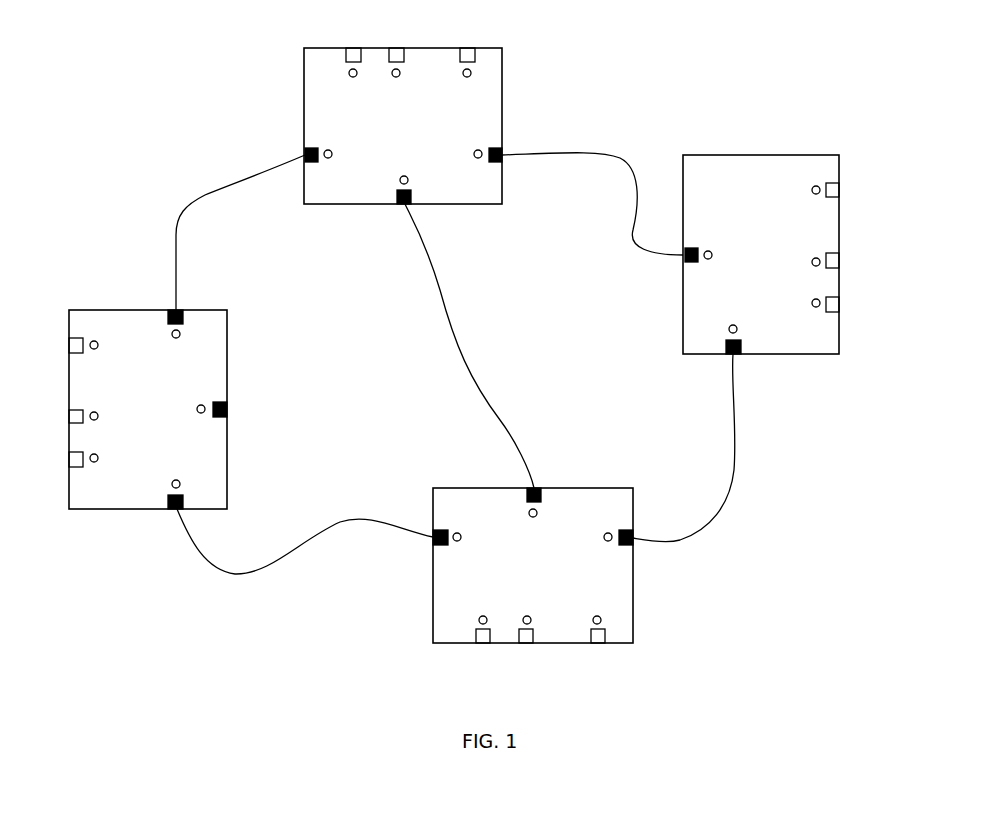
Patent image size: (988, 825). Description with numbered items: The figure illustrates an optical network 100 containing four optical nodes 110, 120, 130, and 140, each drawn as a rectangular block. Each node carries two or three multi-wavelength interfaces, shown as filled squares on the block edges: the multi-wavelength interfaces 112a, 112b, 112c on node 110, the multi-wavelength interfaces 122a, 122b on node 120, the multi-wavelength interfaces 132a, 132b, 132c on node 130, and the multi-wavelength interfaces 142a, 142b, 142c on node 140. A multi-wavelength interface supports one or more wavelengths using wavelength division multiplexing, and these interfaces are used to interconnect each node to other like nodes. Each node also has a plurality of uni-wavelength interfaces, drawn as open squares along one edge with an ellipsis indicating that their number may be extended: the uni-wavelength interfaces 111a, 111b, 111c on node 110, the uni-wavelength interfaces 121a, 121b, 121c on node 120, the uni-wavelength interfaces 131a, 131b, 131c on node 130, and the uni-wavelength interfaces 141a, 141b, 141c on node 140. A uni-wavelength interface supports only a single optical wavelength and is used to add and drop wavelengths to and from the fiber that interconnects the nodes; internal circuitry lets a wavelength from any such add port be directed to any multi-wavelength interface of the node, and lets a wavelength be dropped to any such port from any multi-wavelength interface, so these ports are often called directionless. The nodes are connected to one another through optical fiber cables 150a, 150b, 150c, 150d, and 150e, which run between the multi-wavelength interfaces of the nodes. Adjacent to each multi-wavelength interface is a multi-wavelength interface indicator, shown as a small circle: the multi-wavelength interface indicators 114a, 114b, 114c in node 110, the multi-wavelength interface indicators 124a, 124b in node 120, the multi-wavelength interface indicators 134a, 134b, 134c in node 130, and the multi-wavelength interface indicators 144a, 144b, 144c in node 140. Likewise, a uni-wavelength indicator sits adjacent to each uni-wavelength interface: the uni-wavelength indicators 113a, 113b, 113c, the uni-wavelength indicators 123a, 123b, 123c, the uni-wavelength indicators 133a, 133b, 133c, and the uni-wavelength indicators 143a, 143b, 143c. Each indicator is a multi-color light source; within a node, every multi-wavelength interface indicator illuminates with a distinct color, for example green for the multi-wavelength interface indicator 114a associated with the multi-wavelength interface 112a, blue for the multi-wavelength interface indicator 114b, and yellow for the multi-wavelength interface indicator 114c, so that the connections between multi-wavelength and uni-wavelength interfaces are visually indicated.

The optical network 100 is at (196, 18).
The optical node 110 is at (503, 199).
The uni-wavelength interface 111a is at (348, 48).
The uni-wavelength interface 111b is at (398, 48).
The uni-wavelength interface 111c is at (465, 48).
The multi-wavelength interface 112a is at (306, 149).
The multi-wavelength interface 112b is at (503, 149).
The multi-wavelength interface 112c is at (400, 205).
The uni-wavelength indicator 113a is at (351, 77).
The uni-wavelength indicator 113b is at (394, 77).
The uni-wavelength indicator 113c is at (465, 77).
The multi-wavelength interface indicator 114a is at (331, 157).
The multi-wavelength interface indicator 114b is at (477, 150).
The multi-wavelength interface indicator 114c is at (408, 182).
The optical node 120 is at (841, 162).
The uni-wavelength interface 121a is at (840, 307).
The uni-wavelength interface 121b is at (840, 260).
The uni-wavelength interface 121c is at (840, 190).
The multi-wavelength interface 122a is at (740, 355).
The multi-wavelength interface 122b is at (684, 263).
The uni-wavelength indicator 123a is at (813, 305).
The uni-wavelength indicator 123b is at (813, 264).
The uni-wavelength indicator 123c is at (813, 193).
The multi-wavelength interface indicator 124a is at (730, 327).
The multi-wavelength interface indicator 124b is at (707, 251).
The optical node 130 is at (634, 490).
The uni-wavelength interface 131a is at (480, 643).
The uni-wavelength interface 131b is at (530, 643).
The uni-wavelength interface 131c is at (594, 643).
The multi-wavelength interface 132a is at (434, 545).
The multi-wavelength interface 132b is at (634, 547).
The multi-wavelength interface 132c is at (527, 489).
The uni-wavelength indicator 133a is at (481, 616).
The uni-wavelength indicator 133b is at (525, 616).
The uni-wavelength indicator 133c is at (595, 616).
The multi-wavelength interface indicator 134a is at (459, 533).
The multi-wavelength interface indicator 134b is at (606, 541).
The multi-wavelength interface indicator 134c is at (537, 513).
The optical node 140 is at (69, 310).
The uni-wavelength interface 141a is at (69, 462).
The uni-wavelength interface 141b is at (69, 417).
The uni-wavelength interface 141c is at (69, 348).
The multi-wavelength interface 142a is at (168, 509).
The multi-wavelength interface 142b is at (168, 311).
The multi-wavelength interface 142c is at (227, 417).
The uni-wavelength indicator 143a is at (97, 461).
The uni-wavelength indicator 143b is at (97, 419).
The uni-wavelength indicator 143c is at (97, 348).
The multi-wavelength interface indicator 144a is at (197, 468).
The multi-wavelength interface indicator 144b is at (172, 335).
The multi-wavelength interface indicator 144c is at (202, 405).
The optical fiber cable 150a is at (203, 196).
The optical fiber cable 150b is at (457, 343).
The optical fiber cable 150c is at (633, 230).
The optical fiber cable 150d is at (733, 418).
The optical fiber cable 150e is at (222, 575).